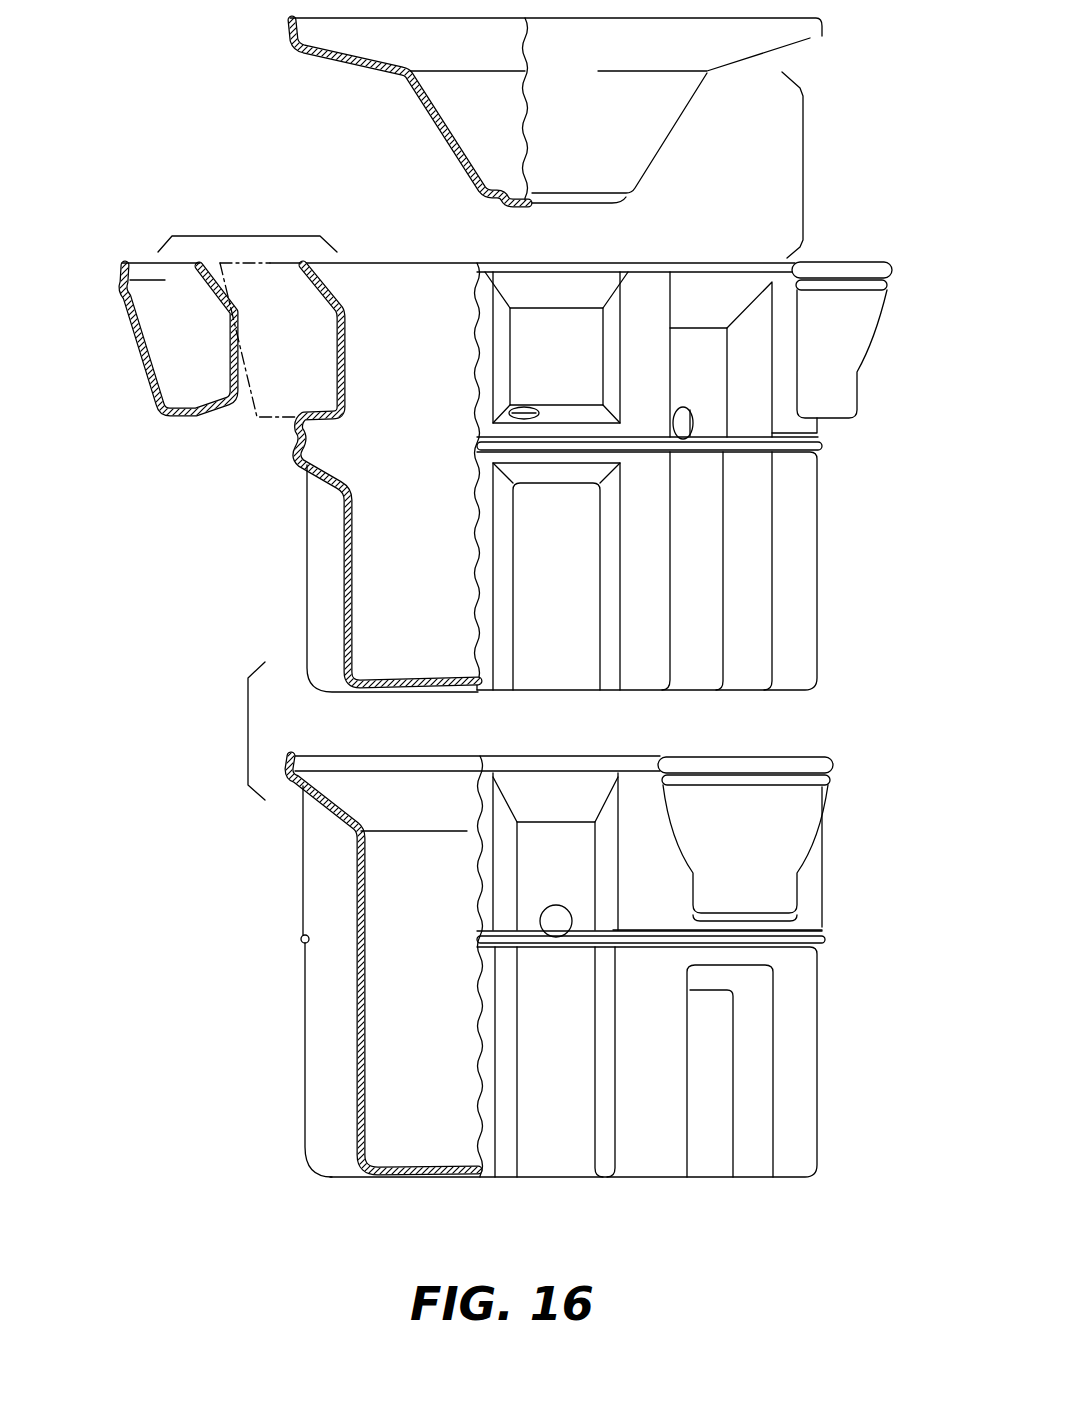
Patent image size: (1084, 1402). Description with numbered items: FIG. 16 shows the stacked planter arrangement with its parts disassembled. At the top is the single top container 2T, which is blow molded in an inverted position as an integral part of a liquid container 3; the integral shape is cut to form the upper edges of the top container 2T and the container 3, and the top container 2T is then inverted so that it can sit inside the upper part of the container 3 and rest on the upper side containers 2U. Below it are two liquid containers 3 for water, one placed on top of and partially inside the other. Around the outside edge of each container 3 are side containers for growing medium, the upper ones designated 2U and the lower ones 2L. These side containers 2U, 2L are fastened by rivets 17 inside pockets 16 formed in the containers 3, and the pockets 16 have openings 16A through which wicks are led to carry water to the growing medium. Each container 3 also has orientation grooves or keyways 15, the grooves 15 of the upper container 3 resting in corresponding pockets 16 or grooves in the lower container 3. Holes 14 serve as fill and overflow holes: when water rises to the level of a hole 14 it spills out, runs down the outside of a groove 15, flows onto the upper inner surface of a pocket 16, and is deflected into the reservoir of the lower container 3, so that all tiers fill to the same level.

The top container 2T is at (810, 38).
The upper side container 2U is at (848, 269).
The lower side container 2L is at (833, 762).
The container 3 is at (818, 620).
The hole 14 is at (712, 413).
The orientation groove 15 is at (350, 565).
The pocket 16 is at (345, 330).
The opening 16A is at (527, 414).
The rivet 17 is at (303, 940).